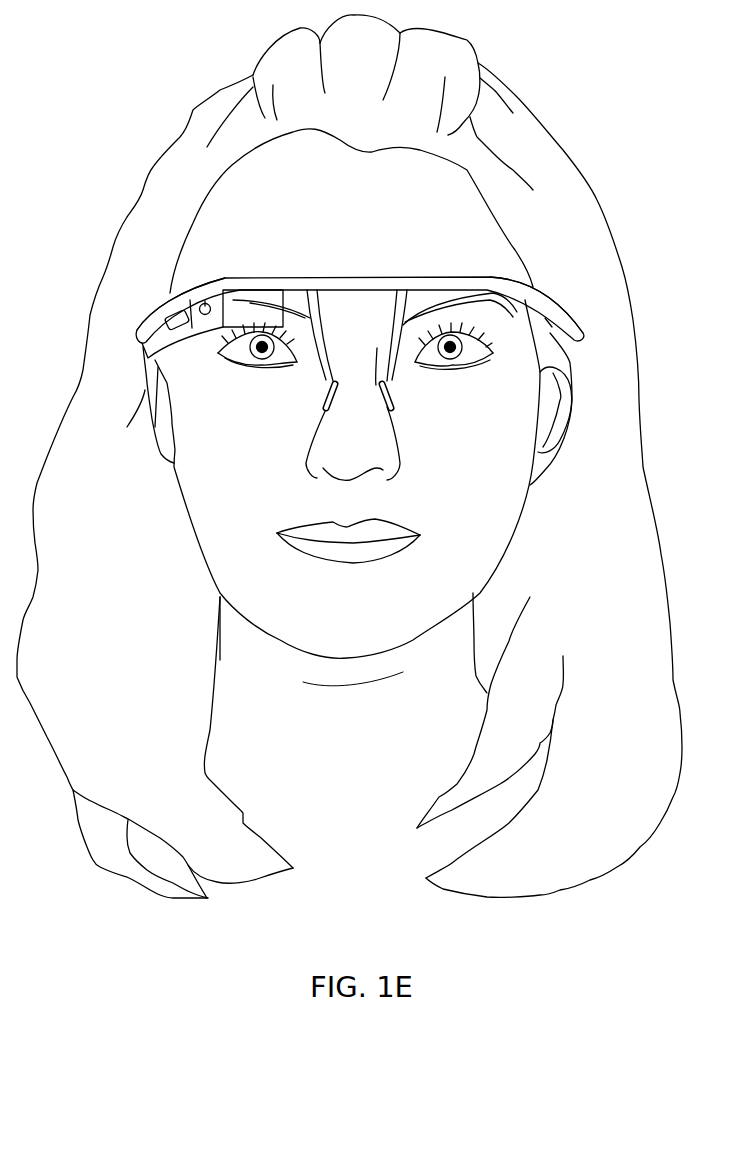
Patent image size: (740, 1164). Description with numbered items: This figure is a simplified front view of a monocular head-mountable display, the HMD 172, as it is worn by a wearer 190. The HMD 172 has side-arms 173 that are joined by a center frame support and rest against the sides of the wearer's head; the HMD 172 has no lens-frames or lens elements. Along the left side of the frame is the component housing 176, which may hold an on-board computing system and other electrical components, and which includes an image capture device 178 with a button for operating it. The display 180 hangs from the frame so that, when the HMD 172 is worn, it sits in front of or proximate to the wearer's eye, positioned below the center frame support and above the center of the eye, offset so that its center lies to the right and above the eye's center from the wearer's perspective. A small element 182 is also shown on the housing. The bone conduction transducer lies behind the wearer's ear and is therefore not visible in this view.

The wearer 190 is at (607, 173).
The HMD 172 is at (350, 270).
The side-arms 173 is at (156, 307).
The component housing 176 is at (163, 353).
The image capture device 178 is at (203, 304).
The display 180 is at (253, 310).
The camera / sensor window 182 is at (179, 324).